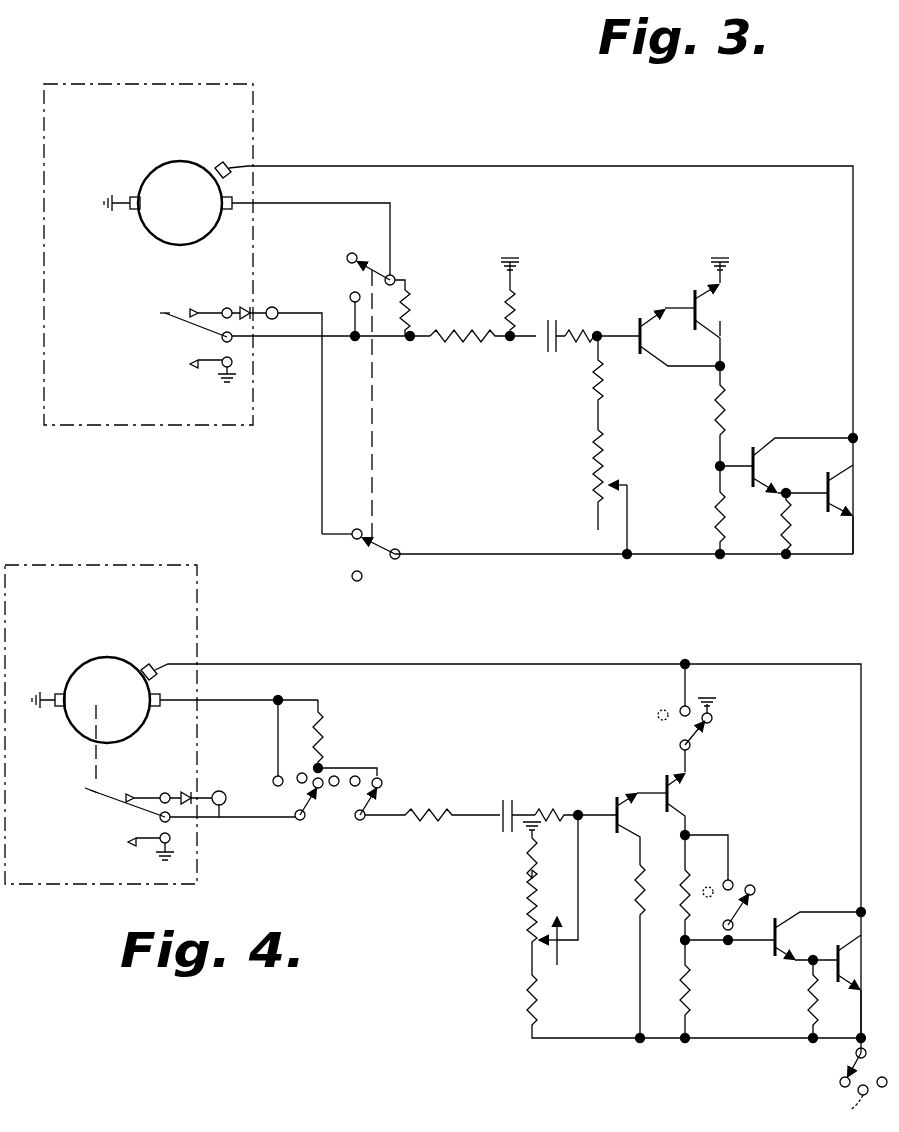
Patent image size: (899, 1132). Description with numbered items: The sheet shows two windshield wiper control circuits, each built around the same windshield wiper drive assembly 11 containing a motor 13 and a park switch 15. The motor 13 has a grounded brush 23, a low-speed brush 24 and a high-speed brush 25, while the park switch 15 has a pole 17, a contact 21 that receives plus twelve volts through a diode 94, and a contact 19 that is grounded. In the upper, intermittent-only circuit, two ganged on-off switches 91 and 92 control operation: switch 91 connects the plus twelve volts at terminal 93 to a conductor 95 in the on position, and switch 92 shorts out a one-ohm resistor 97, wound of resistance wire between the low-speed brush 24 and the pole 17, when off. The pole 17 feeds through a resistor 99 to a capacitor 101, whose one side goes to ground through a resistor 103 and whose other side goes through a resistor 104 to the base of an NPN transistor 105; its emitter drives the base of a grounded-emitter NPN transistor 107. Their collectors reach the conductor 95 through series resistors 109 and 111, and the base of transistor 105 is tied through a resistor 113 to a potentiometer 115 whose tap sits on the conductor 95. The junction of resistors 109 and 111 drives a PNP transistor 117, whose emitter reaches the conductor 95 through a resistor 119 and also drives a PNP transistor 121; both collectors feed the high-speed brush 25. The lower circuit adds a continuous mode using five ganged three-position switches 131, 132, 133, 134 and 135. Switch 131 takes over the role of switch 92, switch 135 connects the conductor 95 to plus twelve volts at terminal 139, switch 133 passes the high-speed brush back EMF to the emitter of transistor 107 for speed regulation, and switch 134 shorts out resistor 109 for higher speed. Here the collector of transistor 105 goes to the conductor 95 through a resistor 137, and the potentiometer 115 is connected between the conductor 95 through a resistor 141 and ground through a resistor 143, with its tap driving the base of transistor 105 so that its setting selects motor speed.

In FIG. 3, the windshield wiper drive assembly 11 is at (253, 146).
In FIG. 4, the windshield wiper drive assembly 11 is at (128, 565).
In FIG. 3, the motor 13 is at (155, 176).
In FIG. 4, the motor 13 is at (97, 662).
In FIG. 3, the park switch 15 is at (165, 328).
In FIG. 4, the park switch 15 is at (118, 820).
In FIG. 3, the pole of the park switch 17 is at (170, 305).
In FIG. 4, the pole of the park switch 17 is at (98, 800).
In FIG. 3, the contact of the park switch 19 is at (210, 370).
In FIG. 4, the contact of the park switch 19 is at (140, 848).
In FIG. 3, the contact of the park switch 21 is at (203, 308).
In FIG. 4, the contact of the park switch 21 is at (140, 792).
In FIG. 3, the brush 23 is at (133, 210).
In FIG. 4, the brush 23 is at (58, 708).
In FIG. 3, the low-speed brush 24 is at (236, 210).
In FIG. 4, the low-speed brush 24 is at (158, 708).
In FIG. 3, the high-speed brush 25 is at (222, 160).
In FIG. 4, the high-speed brush 25 is at (148, 660).
In FIG. 3, the switch 91 is at (380, 540).
In FIG. 3, the switch 92 is at (393, 268).
In FIG. 3, the terminal 93 is at (270, 305).
In FIG. 4, the terminal 93 is at (219, 822).
In FIG. 3, the diode 94 is at (243, 300).
In FIG. 4, the diode 94 is at (185, 788).
In FIG. 3, the conductor 95 is at (512, 554).
In FIG. 4, the conductor 95 is at (600, 1038).
In FIG. 3, the resistor 97 is at (415, 318).
In FIG. 4, the resistor 97 is at (322, 740).
In FIG. 3, the resistor 99 is at (476, 345).
In FIG. 4, the resistor 99 is at (445, 825).
In FIG. 3, the capacitor 101 is at (556, 318).
In FIG. 4, the capacitor 101 is at (498, 798).
In FIG. 3, the resistor 103 is at (515, 310).
In FIG. 3, the resistor 104 is at (578, 348).
In FIG. 4, the resistor 104 is at (548, 805).
In FIG. 3, the NPN transistor 105 is at (640, 310).
In FIG. 4, the NPN transistor 105 is at (617, 790).
In FIG. 3, the NPN transistor 107 is at (700, 312).
In FIG. 4, the NPN transistor 107 is at (672, 798).
In FIG. 3, the resistor 109 is at (726, 420).
In FIG. 4, the resistor 109 is at (680, 882).
In FIG. 3, the resistor 111 is at (712, 520).
In FIG. 4, the resistor 111 is at (690, 990).
In FIG. 3, the resistor 113 is at (592, 372).
In FIG. 3, the potentiometer 115 is at (592, 458).
In FIG. 4, the potentiometer 115 is at (526, 902).
In FIG. 3, the PNP transistor 117 is at (758, 455).
In FIG. 4, the PNP transistor 117 is at (775, 965).
In FIG. 3, the resistor 119 is at (780, 520).
In FIG. 4, the resistor 119 is at (810, 998).
In FIG. 3, the PNP transistor 121 is at (808, 500).
In FIG. 4, the PNP transistor 121 is at (830, 945).
In FIG. 4, the switch 131 is at (306, 820).
In FIG. 4, the switch 132 is at (375, 802).
In FIG. 4, the switch 133 is at (700, 740).
In FIG. 4, the switch 134 is at (745, 905).
In FIG. 4, the switch 135 is at (852, 1066).
In FIG. 4, the resistor 137 is at (632, 892).
In FIG. 4, the terminal 139 is at (848, 1108).
In FIG. 4, the resistor 141 is at (528, 990).
In FIG. 4, the resistor 143 is at (526, 845).